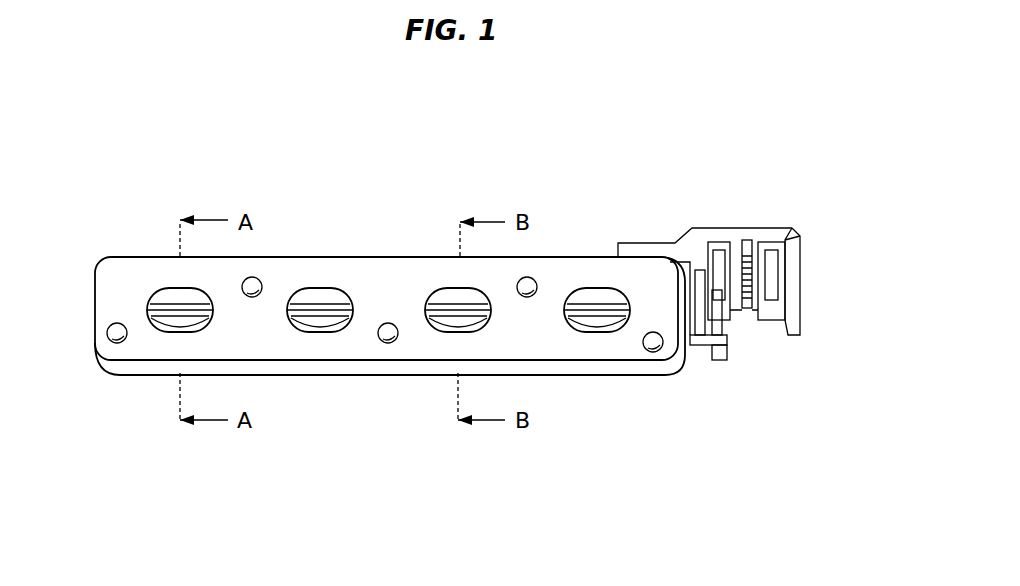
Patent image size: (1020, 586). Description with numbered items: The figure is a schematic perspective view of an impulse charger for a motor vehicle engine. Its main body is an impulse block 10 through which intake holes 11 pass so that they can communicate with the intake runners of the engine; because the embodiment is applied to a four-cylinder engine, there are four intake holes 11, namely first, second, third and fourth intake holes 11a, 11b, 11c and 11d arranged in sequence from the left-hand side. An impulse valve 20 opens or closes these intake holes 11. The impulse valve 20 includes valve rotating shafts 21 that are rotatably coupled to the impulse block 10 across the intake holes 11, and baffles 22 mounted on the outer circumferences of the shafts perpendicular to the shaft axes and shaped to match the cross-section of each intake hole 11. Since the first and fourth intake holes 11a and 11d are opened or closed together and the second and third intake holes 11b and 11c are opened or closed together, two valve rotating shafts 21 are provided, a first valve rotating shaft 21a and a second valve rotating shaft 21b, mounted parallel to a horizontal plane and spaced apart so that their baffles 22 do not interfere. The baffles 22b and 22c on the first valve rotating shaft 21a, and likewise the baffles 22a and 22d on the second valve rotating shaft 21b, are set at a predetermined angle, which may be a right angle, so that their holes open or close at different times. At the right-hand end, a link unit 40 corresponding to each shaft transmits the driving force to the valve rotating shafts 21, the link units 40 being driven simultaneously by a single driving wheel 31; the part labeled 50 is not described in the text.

The impulse block 10 is at (110, 272).
The intake holes 11 is at (597, 122).
The first intake hole 11a is at (163, 290).
The second intake hole 11b is at (312, 290).
The third intake hole 11c is at (445, 290).
The fourth intake hole 11d is at (587, 290).
The impulse valve 20 is at (530, 578).
The valve rotating shafts 21 is at (738, 488).
The first valve rotating shaft 21a is at (598, 320).
The second valve rotating shaft 21b is at (602, 318).
The baffles 22 is at (570, 502).
The baffle 22a is at (195, 327).
The baffle 22b is at (318, 327).
The baffle 22c is at (452, 327).
The baffle 22d is at (573, 327).
The driving wheel 31 is at (747, 258).
The link unit 40 is at (752, 309).
The side wall 50 is at (795, 248).